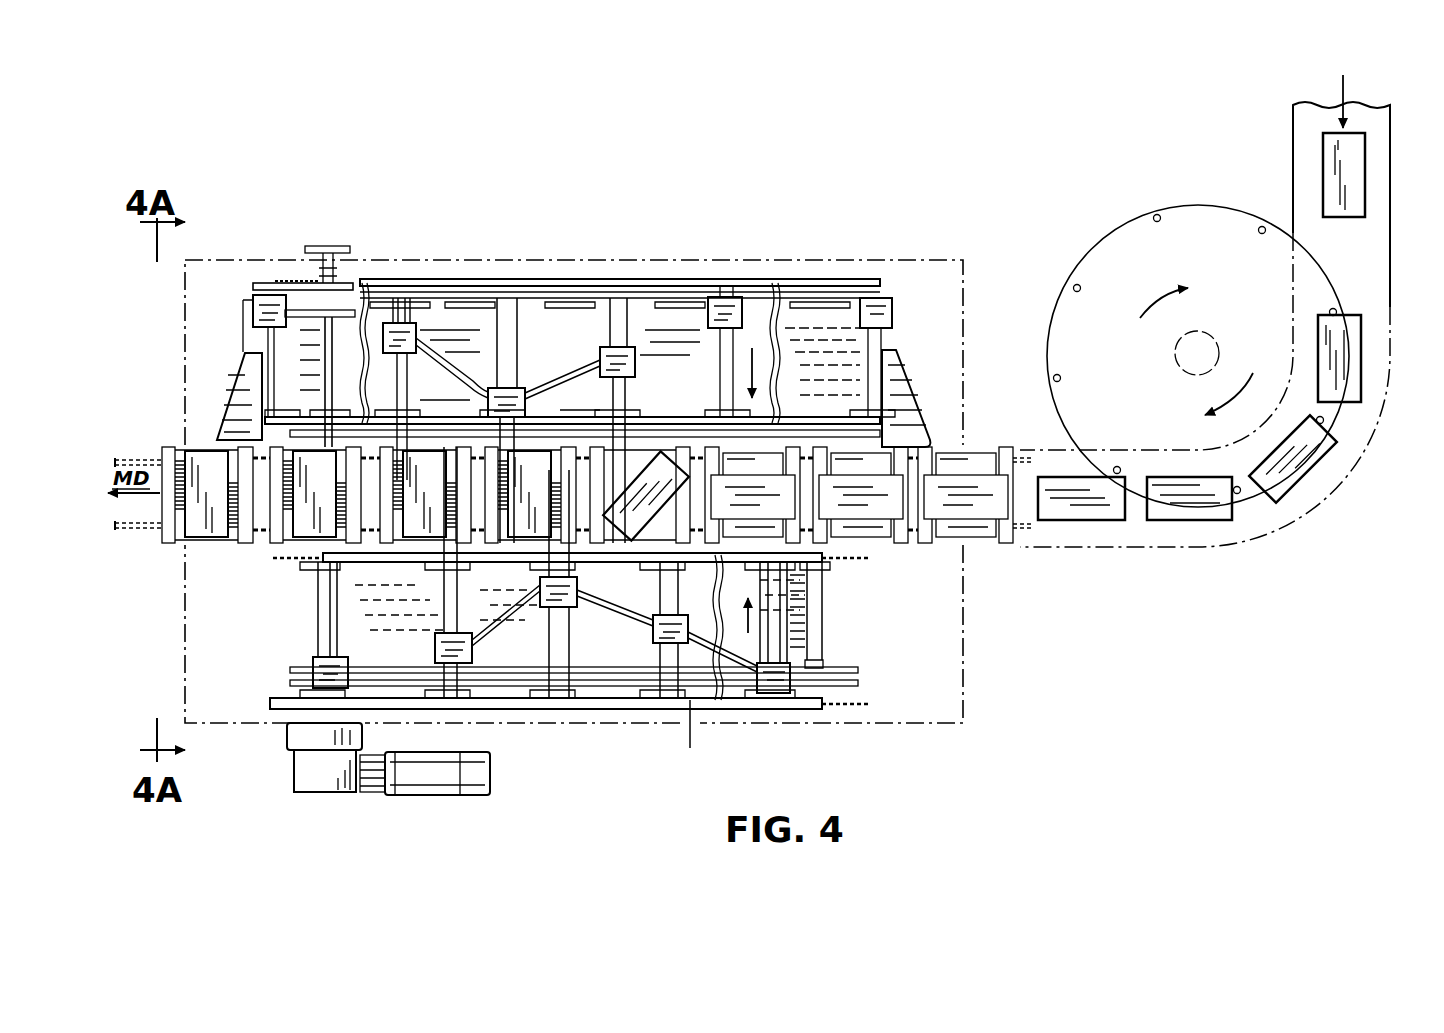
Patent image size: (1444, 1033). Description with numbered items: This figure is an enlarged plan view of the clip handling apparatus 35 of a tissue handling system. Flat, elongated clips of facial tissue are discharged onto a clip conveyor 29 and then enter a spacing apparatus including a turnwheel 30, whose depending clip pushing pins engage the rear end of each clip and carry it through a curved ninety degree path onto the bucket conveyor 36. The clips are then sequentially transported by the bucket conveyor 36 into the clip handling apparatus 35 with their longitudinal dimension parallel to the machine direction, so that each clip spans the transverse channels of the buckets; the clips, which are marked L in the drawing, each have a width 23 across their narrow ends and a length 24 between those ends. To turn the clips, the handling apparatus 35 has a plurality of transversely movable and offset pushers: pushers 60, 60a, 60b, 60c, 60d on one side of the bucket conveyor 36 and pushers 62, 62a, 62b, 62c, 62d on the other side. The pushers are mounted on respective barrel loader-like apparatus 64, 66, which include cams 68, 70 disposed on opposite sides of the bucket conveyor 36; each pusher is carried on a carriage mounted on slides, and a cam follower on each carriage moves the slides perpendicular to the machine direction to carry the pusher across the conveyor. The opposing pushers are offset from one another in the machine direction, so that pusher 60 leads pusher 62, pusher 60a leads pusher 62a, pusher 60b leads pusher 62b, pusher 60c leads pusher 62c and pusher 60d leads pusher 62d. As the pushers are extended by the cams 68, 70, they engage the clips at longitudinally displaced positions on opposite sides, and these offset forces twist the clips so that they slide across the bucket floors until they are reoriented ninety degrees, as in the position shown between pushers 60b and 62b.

The width 23 is at (1340, 315).
The length 24 is at (1363, 358).
The clip conveyor 29 is at (1391, 233).
The turnwheel 30 is at (1126, 258).
The clip handling apparatus 35 is at (298, 828).
The bucket conveyor 36 is at (985, 547).
The pusher 60 is at (752, 392).
The pusher 60a is at (618, 472).
The pusher 60b is at (530, 470).
The pusher 60c is at (326, 407).
The pusher 60d is at (246, 386).
The pusher 62 is at (775, 606).
The pusher 62a is at (650, 542).
The pusher 62b is at (541, 530).
The pusher 62c is at (440, 530).
The pusher 62d is at (320, 622).
The barrel loader-like apparatus 64 is at (656, 258).
The barrel loader-like apparatus 66 is at (590, 738).
The cam 68 is at (482, 388).
The cam 70 is at (691, 740).
The label L is at (1364, 386).